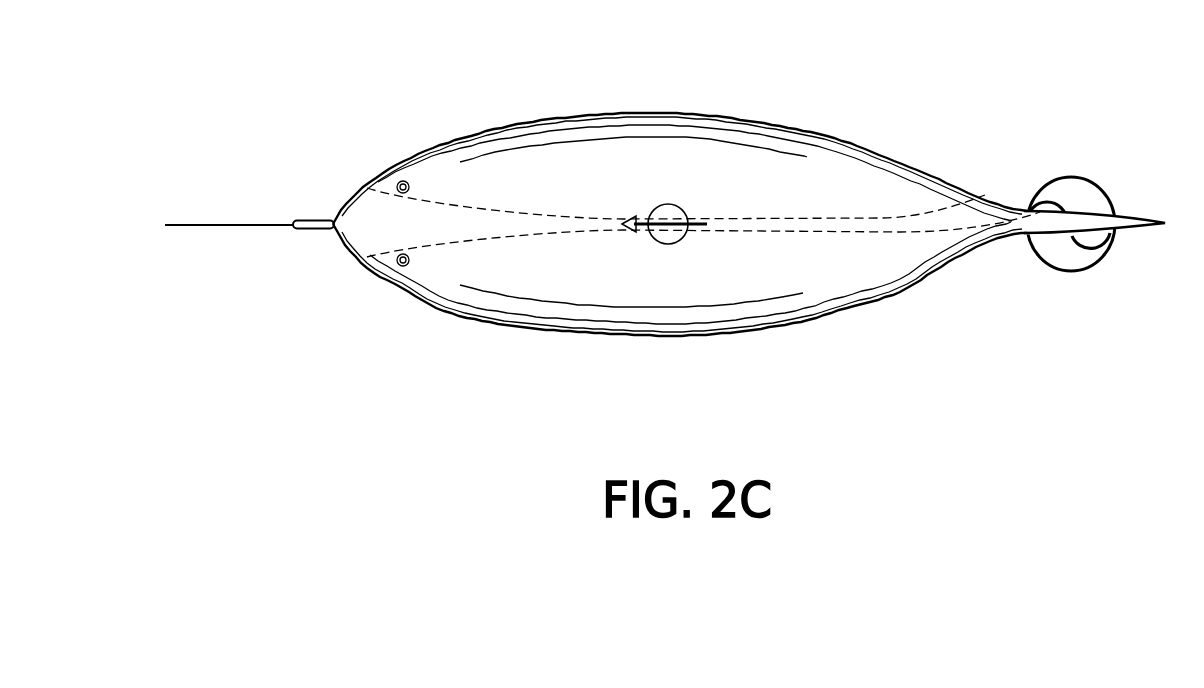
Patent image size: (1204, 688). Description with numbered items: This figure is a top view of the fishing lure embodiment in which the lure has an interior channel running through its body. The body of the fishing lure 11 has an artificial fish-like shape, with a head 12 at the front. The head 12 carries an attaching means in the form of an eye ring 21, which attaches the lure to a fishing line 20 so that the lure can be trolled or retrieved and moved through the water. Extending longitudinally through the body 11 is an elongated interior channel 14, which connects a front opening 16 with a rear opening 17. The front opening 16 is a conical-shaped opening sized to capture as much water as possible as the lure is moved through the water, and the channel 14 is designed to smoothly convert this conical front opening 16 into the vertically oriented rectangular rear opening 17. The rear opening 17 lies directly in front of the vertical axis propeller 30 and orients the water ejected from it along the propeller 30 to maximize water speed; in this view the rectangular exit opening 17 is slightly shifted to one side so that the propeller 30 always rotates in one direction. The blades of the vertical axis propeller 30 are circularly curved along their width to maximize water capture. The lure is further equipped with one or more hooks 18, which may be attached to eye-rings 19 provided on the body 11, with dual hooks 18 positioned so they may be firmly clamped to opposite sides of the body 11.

The body of the fishing lure 11 is at (823, 318).
The head 12 is at (545, 178).
The interior channel 14 is at (787, 221).
The front opening 16 is at (353, 230).
The rear opening 17 is at (975, 216).
The hooks 18 is at (700, 222).
The eye-rings 19 is at (665, 210).
The fishing line 20 is at (200, 224).
The eye ring 21 is at (305, 219).
The vertical axis propeller 30 is at (1078, 256).